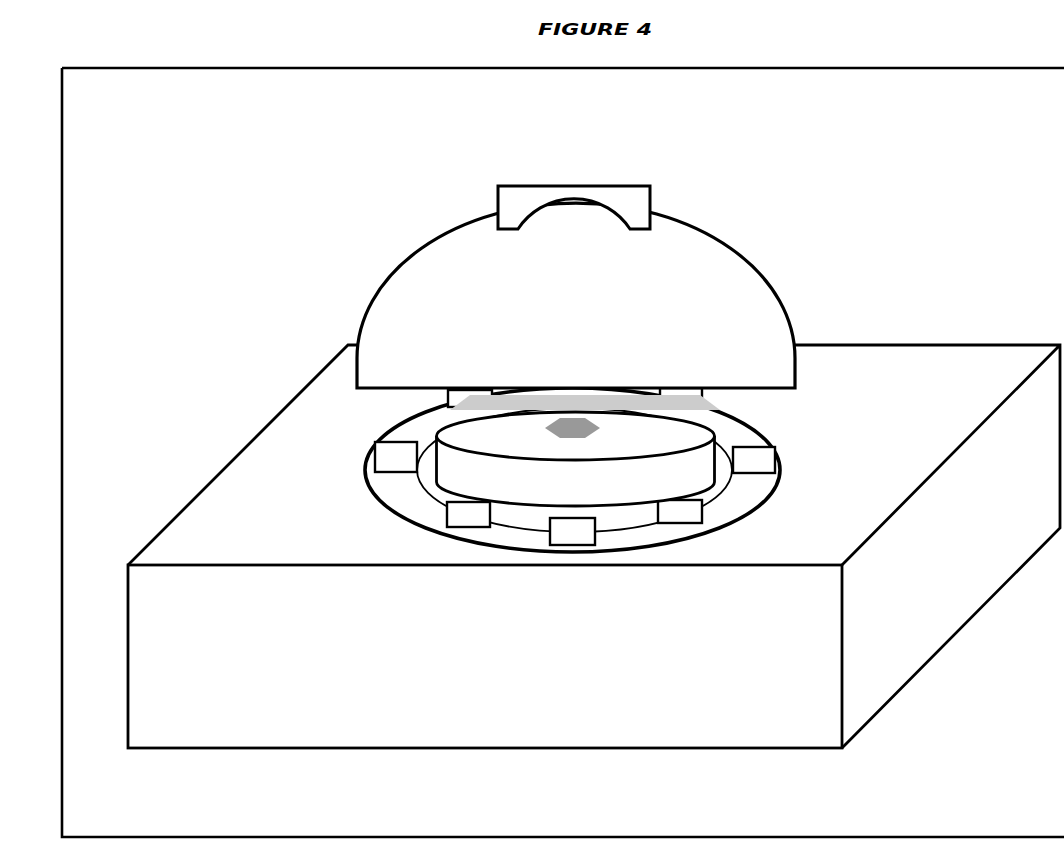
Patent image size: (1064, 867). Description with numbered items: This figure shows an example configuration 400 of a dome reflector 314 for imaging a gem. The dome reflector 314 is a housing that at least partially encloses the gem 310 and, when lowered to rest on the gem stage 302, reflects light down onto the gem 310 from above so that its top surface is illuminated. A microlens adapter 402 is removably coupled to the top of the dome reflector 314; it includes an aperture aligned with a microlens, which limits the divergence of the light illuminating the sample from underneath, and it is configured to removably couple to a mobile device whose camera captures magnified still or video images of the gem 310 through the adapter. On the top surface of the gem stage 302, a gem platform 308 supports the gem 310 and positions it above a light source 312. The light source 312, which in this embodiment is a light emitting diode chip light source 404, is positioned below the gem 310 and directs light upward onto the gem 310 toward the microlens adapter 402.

The example configuration 400 is at (563, 452).
The microlens adapter 402 is at (642, 187).
The dome reflector 314 is at (576, 295).
The gem 310 is at (593, 428).
The gem platform 308 is at (576, 459).
The light emitting diode (LED) chip light source 404 is at (762, 462).
The light source 312 is at (758, 497).
The gem stage 302 is at (594, 546).